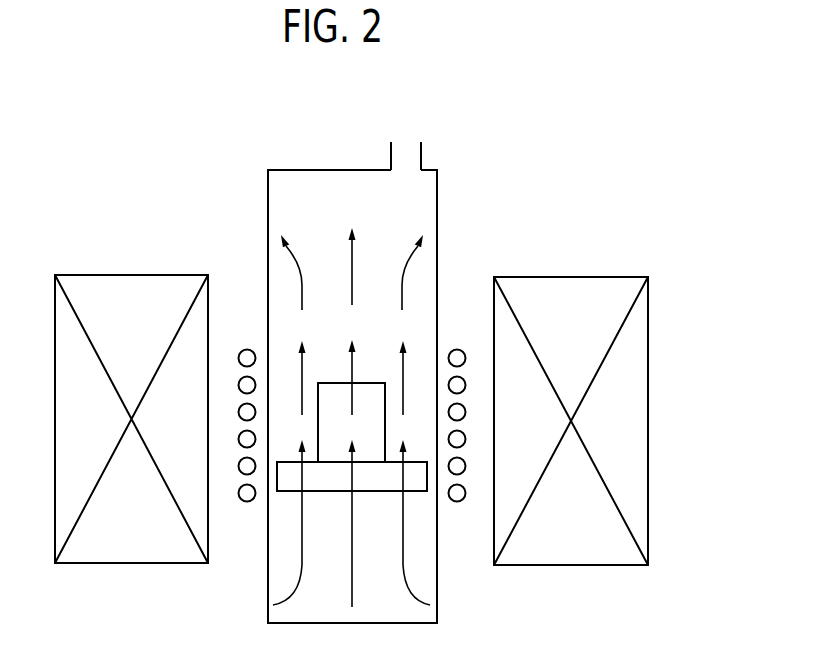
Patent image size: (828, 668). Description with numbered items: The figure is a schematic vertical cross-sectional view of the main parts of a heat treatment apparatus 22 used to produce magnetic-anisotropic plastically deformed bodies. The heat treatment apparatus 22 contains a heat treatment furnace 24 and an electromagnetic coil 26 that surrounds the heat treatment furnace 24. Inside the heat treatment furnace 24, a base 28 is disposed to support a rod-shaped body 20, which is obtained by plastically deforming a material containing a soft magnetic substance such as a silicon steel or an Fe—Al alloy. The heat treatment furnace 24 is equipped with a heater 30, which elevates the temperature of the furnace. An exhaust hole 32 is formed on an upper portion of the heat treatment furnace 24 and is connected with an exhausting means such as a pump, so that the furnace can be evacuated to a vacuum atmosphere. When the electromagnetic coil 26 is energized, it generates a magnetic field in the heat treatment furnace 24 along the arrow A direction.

The rod-shaped body 20 is at (372, 453).
The heat treatment apparatus 22 is at (502, 167).
The heat treatment furnace 24 is at (325, 182).
The electromagnetic coil 26 is at (634, 415).
The base 28 is at (325, 480).
The heater 30 is at (466, 411).
The exhaust hole 32 is at (418, 156).